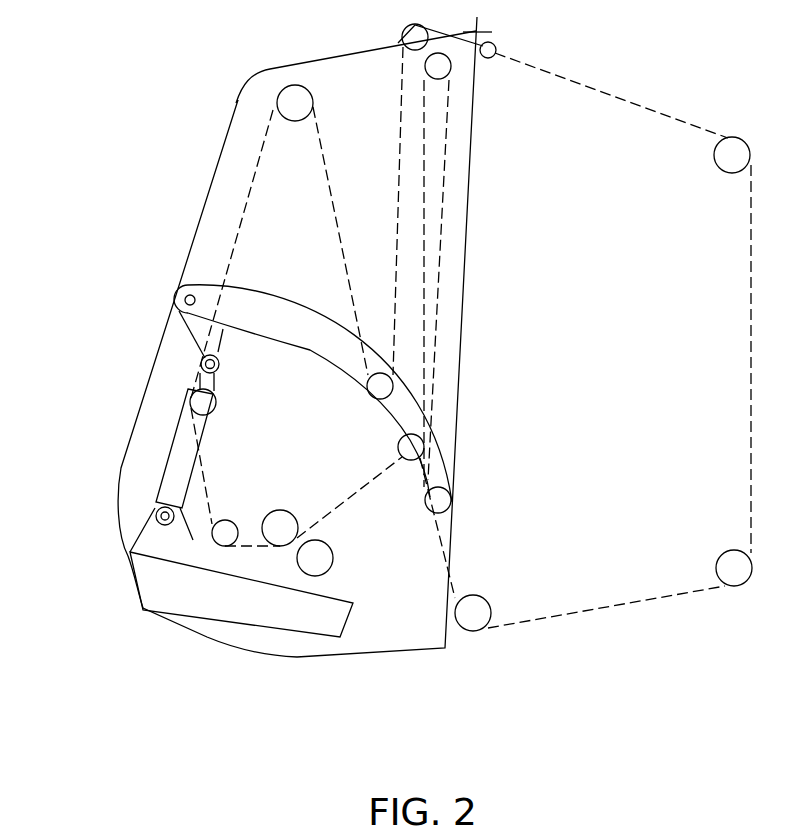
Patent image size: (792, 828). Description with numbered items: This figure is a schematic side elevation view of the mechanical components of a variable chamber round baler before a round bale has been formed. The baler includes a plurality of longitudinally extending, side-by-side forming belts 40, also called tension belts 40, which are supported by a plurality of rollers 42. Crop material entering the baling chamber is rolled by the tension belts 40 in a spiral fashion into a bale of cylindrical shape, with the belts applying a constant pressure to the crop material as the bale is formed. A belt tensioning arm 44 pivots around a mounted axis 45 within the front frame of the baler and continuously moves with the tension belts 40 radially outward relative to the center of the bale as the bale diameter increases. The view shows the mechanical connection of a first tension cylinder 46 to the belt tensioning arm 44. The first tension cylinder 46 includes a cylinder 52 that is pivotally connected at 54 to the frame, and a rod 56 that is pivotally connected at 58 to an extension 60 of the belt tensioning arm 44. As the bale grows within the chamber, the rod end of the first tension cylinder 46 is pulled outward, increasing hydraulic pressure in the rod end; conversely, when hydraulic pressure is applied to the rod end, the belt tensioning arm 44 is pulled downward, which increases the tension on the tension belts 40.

The forming belts 40 is at (752, 387).
The rollers 42 is at (730, 155).
The belt tensioning arm 44 is at (285, 320).
The mounted axis 45 is at (185, 300).
The first tension cylinder 46 is at (190, 447).
The cylinder 52 is at (180, 477).
The pivotal connection 54 is at (163, 519).
The rod 56 is at (200, 383).
The pivotal connection 58 is at (200, 366).
The extension 60 is at (200, 330).